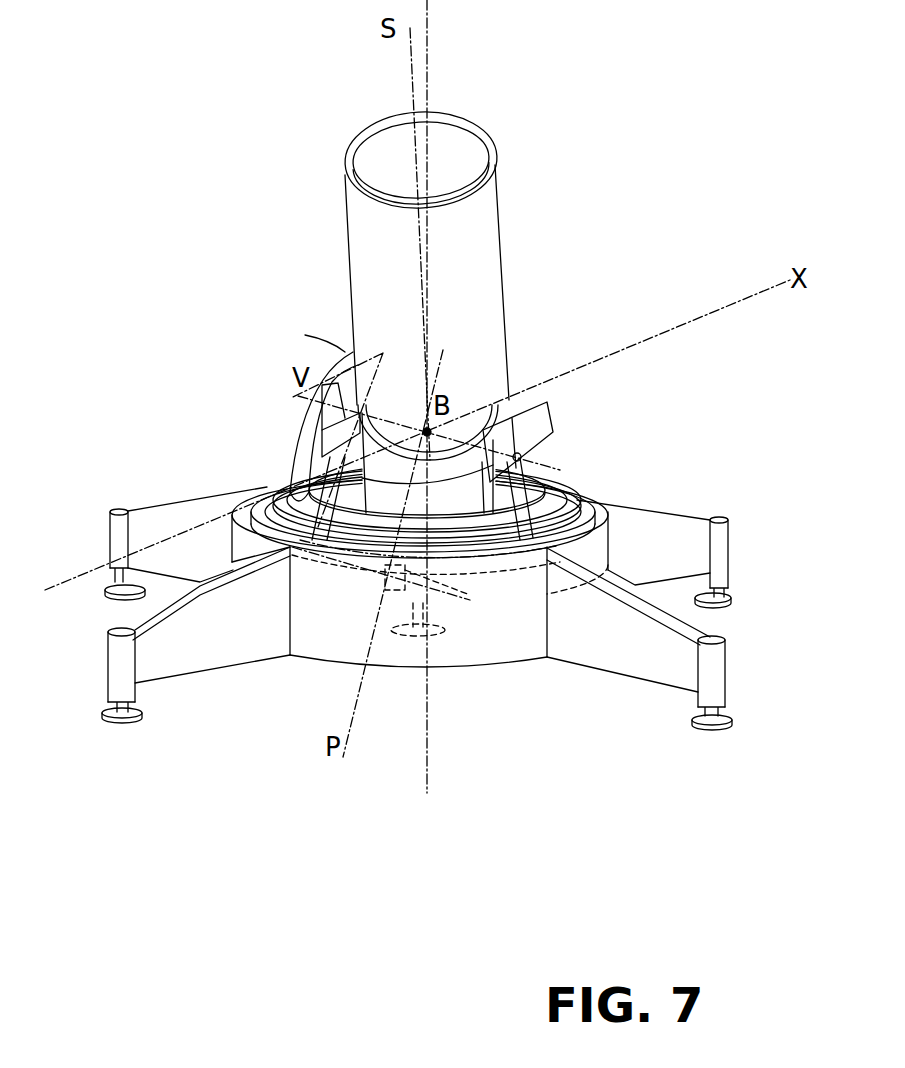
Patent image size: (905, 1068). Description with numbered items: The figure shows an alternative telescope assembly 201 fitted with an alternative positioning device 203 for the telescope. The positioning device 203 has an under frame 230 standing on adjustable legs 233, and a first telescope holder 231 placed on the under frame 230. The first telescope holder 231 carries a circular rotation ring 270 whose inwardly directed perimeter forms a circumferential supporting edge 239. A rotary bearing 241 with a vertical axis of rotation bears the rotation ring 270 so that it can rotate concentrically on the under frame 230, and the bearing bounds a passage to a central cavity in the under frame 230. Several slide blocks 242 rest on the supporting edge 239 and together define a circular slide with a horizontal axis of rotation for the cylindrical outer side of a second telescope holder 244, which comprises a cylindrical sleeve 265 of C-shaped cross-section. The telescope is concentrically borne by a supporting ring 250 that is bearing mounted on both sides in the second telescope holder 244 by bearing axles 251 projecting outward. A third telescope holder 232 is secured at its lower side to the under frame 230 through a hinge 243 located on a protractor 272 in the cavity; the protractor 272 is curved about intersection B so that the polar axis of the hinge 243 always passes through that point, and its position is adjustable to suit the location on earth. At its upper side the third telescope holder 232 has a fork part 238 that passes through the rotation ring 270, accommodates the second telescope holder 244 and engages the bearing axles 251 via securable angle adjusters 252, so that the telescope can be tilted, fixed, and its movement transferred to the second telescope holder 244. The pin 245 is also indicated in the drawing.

The telescope assembly 201 is at (172, 100).
The positioning device 203 is at (314, 710).
The under frame 230 is at (513, 647).
The first telescope holder 231 is at (572, 483).
The third telescope holder 232 is at (513, 647).
The adjustable legs 233 is at (157, 558).
The fork part 238 is at (447, 577).
The circumferential supporting edge 239 is at (262, 490).
The rotary bearing 241 is at (605, 500).
The slide blocks 242 is at (283, 462).
The hinge 243 is at (373, 573).
The second telescope holder 244 is at (305, 420).
The locking pin 245 is at (407, 650).
The supporting ring 250 is at (510, 393).
The bearing axles 251 is at (356, 405).
The angle adjuster 252 is at (555, 433).
The cylindrical sleeve 265 is at (342, 395).
The rotation ring 270 is at (577, 579).
The protractor 272 is at (317, 568).